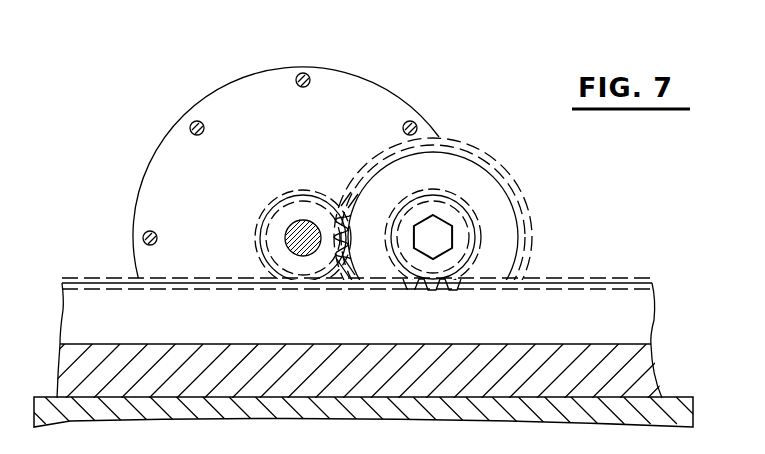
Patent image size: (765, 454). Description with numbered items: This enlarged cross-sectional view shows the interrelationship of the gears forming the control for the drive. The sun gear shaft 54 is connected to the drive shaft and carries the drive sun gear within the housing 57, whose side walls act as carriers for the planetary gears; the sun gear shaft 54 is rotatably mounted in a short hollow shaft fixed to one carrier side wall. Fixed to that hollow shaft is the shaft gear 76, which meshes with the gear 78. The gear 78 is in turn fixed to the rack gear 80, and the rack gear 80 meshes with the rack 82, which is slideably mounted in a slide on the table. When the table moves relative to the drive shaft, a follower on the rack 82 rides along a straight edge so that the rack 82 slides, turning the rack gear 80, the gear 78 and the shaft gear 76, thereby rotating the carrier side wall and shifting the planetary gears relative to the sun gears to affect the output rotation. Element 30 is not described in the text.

The mounting plate 30 is at (325, 62).
The housing 57 is at (188, 109).
The shaft gear 76 is at (308, 200).
The sun gear shaft 54 is at (288, 240).
The gear 78 is at (496, 184).
The rack gear 80 is at (457, 254).
The rack 82 is at (565, 303).